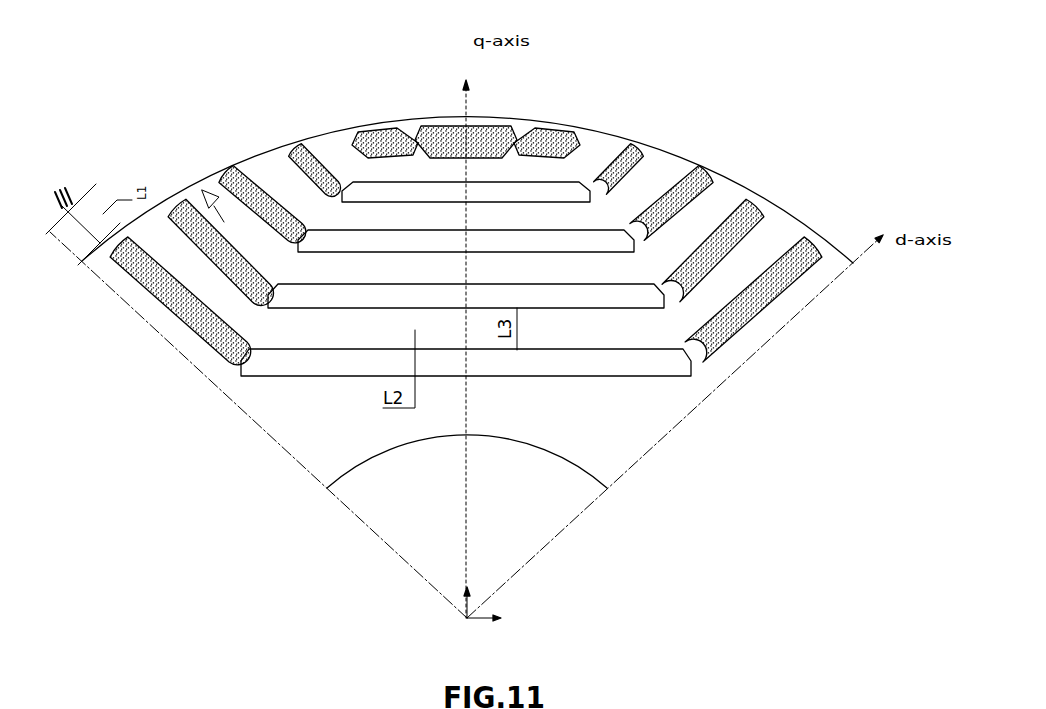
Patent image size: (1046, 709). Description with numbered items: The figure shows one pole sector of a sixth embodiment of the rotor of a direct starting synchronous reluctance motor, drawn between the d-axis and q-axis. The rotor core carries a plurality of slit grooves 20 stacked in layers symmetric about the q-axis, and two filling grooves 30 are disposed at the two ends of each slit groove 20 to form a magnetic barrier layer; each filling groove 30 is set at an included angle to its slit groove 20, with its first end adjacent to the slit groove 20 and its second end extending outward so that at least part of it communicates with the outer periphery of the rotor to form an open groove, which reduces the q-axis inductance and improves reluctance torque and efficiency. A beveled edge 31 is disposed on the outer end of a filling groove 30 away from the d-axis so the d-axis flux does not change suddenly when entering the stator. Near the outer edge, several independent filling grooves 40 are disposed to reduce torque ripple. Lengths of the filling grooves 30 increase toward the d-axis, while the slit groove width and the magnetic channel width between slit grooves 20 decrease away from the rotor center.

The slit groove 20 is at (582, 240).
The filling groove 30 is at (735, 265).
The beveled edge 31 is at (230, 175).
The independent filling groove 40 is at (503, 120).